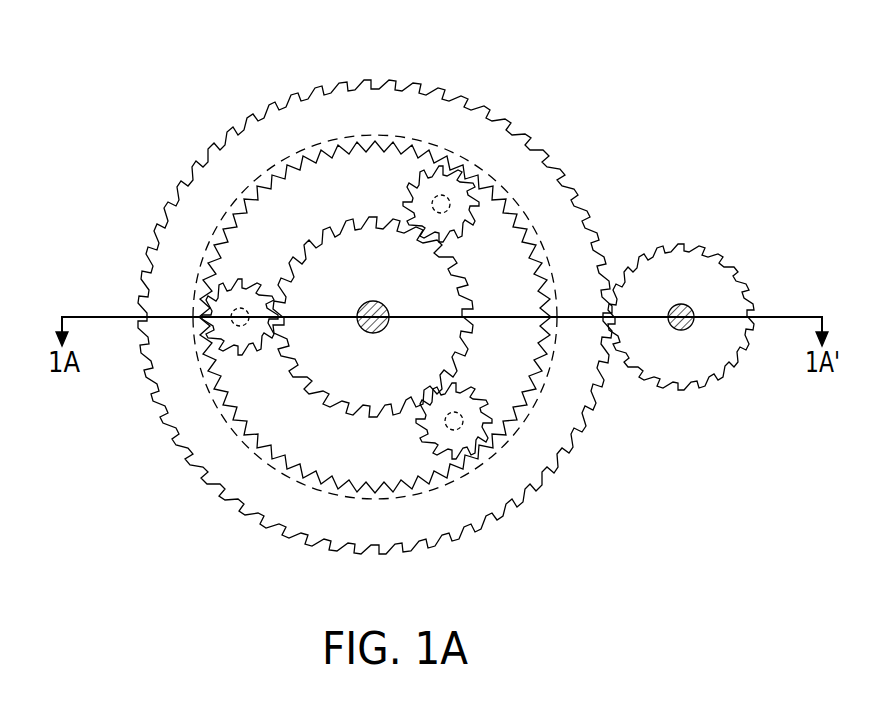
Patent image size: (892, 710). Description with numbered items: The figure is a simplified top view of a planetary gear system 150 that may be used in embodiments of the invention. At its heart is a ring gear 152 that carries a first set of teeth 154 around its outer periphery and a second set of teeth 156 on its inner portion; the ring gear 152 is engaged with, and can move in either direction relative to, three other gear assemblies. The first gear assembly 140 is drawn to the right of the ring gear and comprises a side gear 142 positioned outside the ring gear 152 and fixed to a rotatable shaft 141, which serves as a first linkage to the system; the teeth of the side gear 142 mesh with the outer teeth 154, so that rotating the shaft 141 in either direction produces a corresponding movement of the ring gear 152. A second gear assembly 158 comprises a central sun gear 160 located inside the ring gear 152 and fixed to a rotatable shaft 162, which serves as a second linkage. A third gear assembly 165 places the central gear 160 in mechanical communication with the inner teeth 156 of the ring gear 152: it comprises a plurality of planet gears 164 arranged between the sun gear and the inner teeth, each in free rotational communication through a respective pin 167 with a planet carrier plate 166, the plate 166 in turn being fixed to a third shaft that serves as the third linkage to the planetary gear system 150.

The planetary gear system 150 is at (178, 89).
The ring gear 152 is at (550, 212).
The first set of teeth 154 is at (598, 243).
The second set of teeth 156 is at (508, 212).
The second gear assembly 158 is at (481, 342).
The central gear 160 is at (390, 269).
The rotatable shaft 162 is at (386, 326).
The planet gears 164 is at (428, 172).
The third gear assembly 165 is at (230, 278).
The planet carrier plate 166 is at (372, 498).
The pins 167 is at (272, 330).
The first gear assembly 140 is at (730, 258).
The rotatable shaft 141 is at (682, 330).
The side gear 142 is at (725, 300).